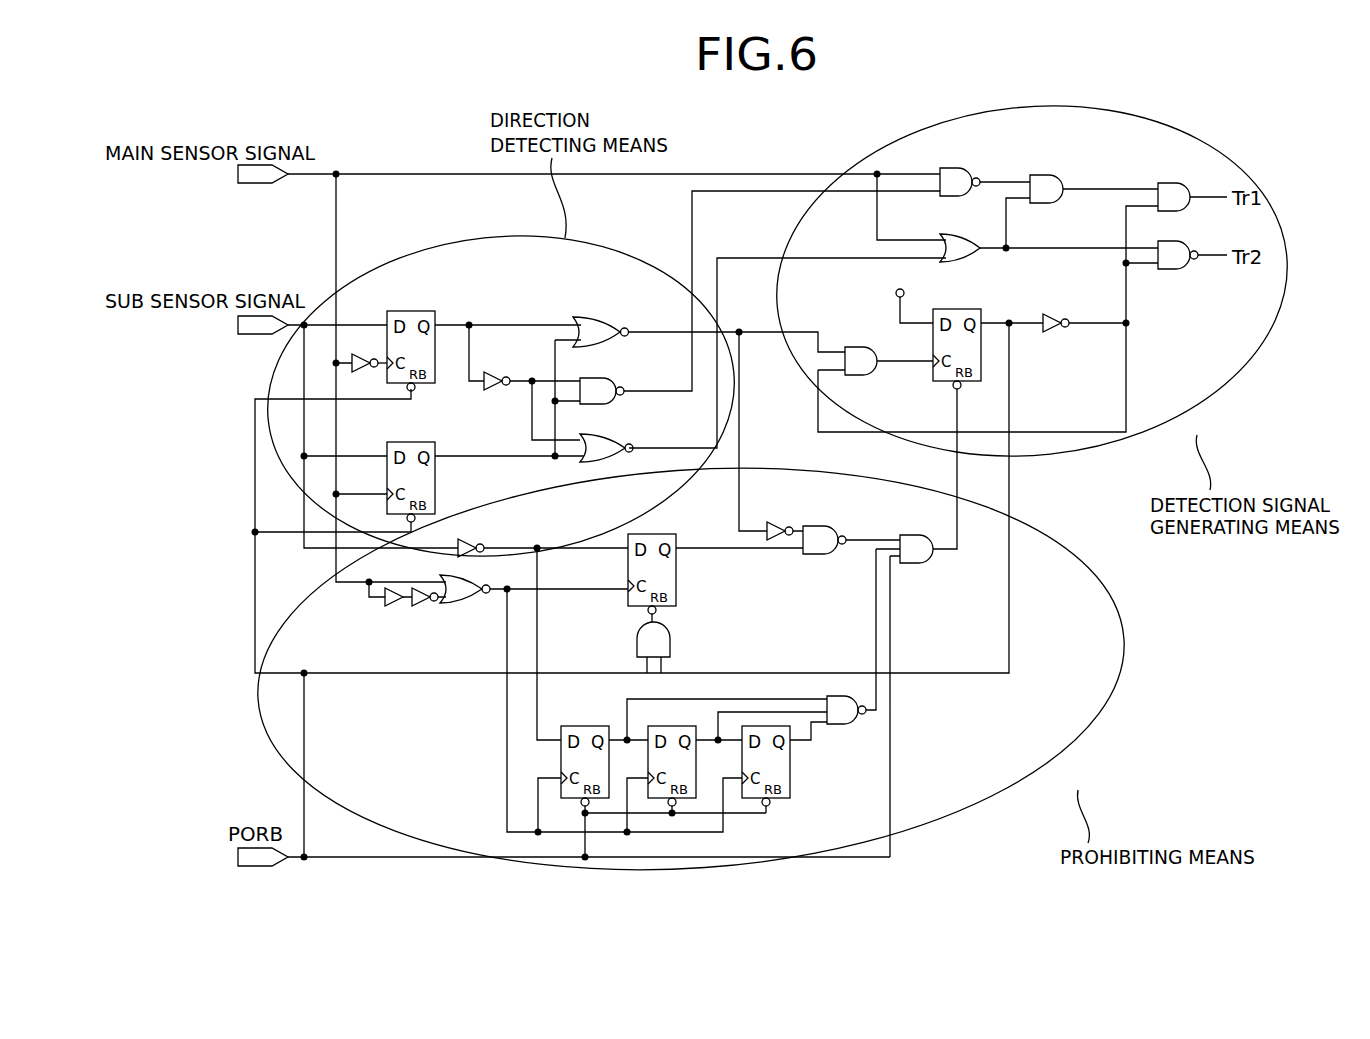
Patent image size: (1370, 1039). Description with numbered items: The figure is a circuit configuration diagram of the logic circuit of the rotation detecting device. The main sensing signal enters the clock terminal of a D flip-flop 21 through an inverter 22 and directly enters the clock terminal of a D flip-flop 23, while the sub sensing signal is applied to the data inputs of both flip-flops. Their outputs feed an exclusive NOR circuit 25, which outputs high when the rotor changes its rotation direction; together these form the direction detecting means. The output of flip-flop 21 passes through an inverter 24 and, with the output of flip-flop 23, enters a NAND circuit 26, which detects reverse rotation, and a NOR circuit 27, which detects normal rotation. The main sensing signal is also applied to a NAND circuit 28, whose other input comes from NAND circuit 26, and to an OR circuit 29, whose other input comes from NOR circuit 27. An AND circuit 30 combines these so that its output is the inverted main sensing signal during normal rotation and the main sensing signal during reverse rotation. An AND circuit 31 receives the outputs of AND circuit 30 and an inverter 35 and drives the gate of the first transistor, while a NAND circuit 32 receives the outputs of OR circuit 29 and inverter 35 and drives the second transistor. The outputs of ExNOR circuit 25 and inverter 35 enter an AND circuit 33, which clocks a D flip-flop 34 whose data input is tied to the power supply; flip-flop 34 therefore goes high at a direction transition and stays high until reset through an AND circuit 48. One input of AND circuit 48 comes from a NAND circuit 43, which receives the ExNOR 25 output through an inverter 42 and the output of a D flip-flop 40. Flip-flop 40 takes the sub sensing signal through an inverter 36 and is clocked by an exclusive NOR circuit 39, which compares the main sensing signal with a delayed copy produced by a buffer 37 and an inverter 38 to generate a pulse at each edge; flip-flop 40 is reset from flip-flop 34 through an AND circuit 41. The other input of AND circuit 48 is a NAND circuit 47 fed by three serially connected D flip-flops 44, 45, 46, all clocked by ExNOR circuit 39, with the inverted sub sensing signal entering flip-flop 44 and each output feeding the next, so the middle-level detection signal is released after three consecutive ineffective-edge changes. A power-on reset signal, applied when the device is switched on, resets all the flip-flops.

The D flip-flop 21 is at (413, 311).
The inverter 22 is at (358, 353).
The D flip-flop 23 is at (411, 442).
The inverter 24 is at (495, 372).
The exclusive NOR circuit 25 is at (590, 318).
The NAND circuit 26 is at (606, 378).
The NOR circuit 27 is at (606, 434).
The NAND circuit 28 is at (953, 168).
The OR circuit 29 is at (958, 234).
The AND circuit 30 is at (1040, 175).
The AND circuit 31 is at (1180, 183).
The NAND circuit 32 is at (1185, 241).
The AND circuit 33 is at (850, 347).
The D flip-flop 34 is at (985, 309).
The inverter 35 is at (1055, 314).
The inverter 36 is at (475, 539).
The buffer 37 is at (388, 606).
The inverter 38 is at (418, 606).
The exclusive NOR circuit 39 is at (470, 603).
The D flip-flop 40 is at (660, 534).
The AND circuit 41 is at (670, 640).
The inverter 42 is at (776, 522).
The NAND circuit 43 is at (815, 526).
The D flip-flop 44 is at (561, 762).
The D flip-flop 45 is at (697, 783).
The D flip-flop 46 is at (790, 778).
The NAND circuit 47 is at (850, 726).
The AND circuit 48 is at (915, 535).